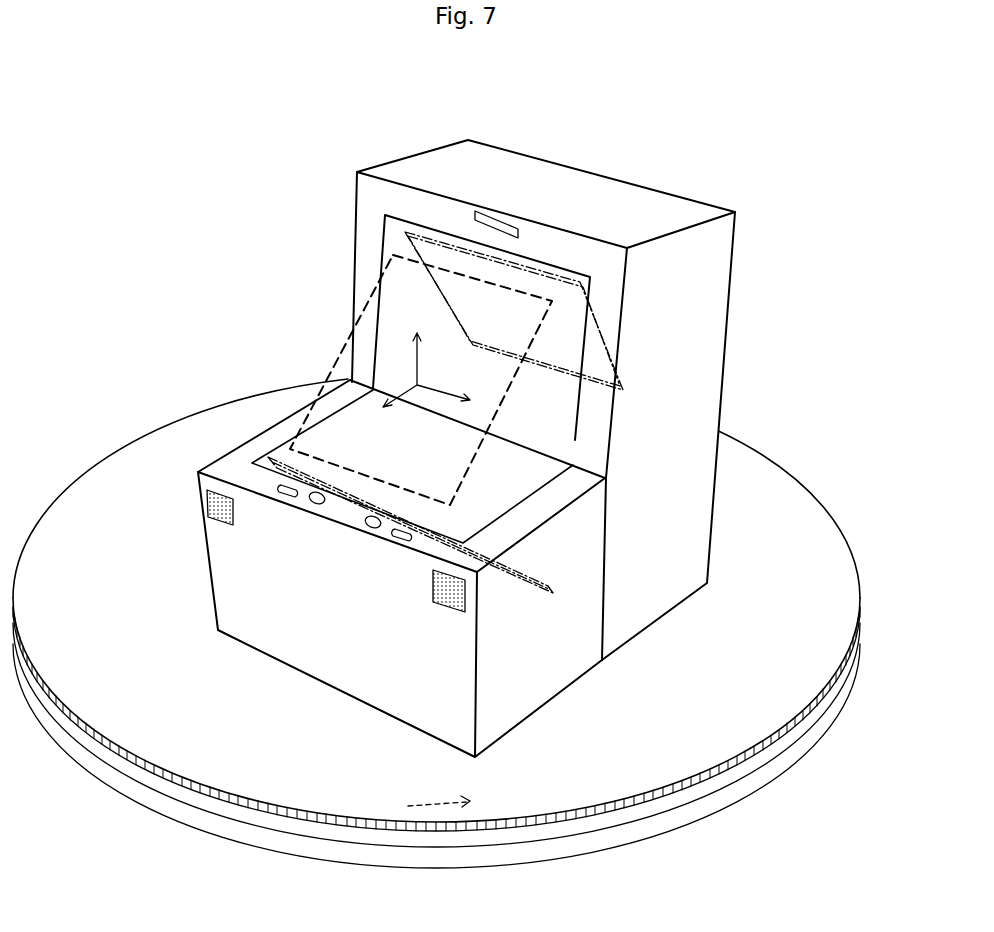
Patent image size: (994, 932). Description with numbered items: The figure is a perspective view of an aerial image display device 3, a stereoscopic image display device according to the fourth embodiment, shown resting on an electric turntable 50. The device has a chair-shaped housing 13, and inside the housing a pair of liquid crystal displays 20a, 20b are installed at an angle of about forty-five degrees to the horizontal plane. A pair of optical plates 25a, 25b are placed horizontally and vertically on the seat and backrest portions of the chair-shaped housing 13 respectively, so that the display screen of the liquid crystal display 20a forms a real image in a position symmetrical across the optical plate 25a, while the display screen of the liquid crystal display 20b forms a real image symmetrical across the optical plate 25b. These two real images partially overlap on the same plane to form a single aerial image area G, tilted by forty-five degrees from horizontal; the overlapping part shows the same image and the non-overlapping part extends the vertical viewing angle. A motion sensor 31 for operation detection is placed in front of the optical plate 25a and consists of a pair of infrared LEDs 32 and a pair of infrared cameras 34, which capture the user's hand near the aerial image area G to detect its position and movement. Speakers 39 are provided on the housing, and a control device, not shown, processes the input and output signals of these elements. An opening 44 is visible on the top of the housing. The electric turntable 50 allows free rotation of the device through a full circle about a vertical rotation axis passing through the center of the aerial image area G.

The aerial image display device 3 is at (452, 433).
The chair-shaped housing 13 is at (395, 355).
The liquid crystal display 20a is at (527, 590).
The liquid crystal display 20b is at (625, 386).
The optical plate 25a is at (483, 502).
The optical plate 25b is at (537, 434).
The motion sensor 31 is at (325, 550).
The infrared LED 32 is at (315, 504).
The infrared camera 34 is at (287, 494).
The speaker 39 is at (218, 512).
The sensor window 44 is at (506, 228).
The electric turntable 50 is at (191, 402).
The aerial image area G is at (345, 353).